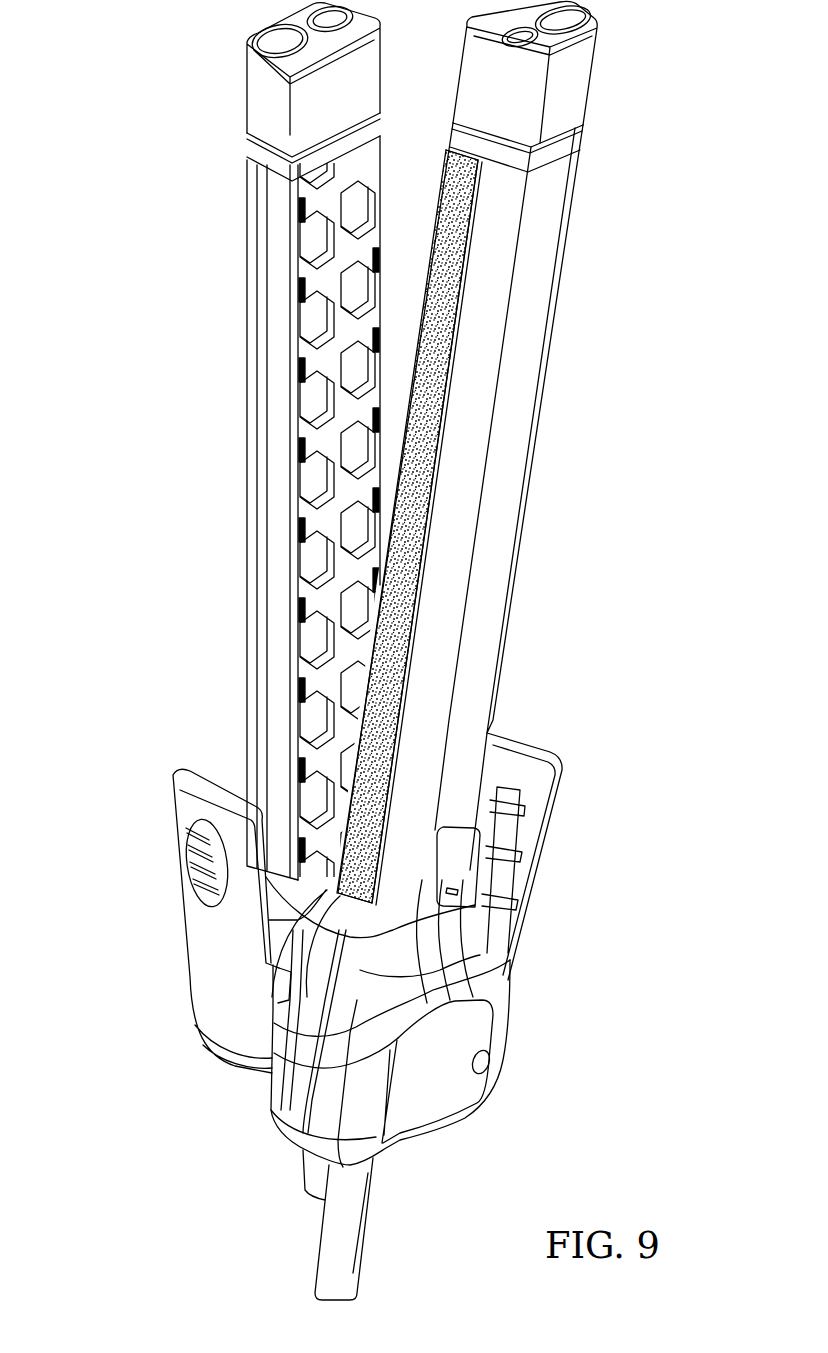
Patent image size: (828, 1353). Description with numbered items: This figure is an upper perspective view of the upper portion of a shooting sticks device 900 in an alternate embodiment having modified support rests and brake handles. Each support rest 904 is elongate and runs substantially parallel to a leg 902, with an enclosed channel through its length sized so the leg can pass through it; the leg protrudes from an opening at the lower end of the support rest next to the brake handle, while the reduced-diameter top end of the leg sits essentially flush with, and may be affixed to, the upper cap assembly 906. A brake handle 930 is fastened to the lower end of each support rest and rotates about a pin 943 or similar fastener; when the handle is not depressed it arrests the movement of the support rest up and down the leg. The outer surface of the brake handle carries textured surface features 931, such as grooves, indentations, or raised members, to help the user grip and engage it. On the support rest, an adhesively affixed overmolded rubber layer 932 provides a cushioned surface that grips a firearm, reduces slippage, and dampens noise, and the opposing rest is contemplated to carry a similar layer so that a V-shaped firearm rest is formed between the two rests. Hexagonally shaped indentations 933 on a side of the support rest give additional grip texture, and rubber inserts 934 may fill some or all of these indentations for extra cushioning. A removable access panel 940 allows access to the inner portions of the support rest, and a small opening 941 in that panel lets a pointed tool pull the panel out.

The hair styling device 900 is at (118, 272).
The leg 902 is at (300, 1175).
The support rest 904 is at (545, 417).
The upper cap assembly 906 is at (594, 90).
The brake handle 930 is at (189, 934).
The textured surface features 931 is at (191, 890).
The overmolded rubber layer 932 is at (407, 527).
The hexagonally shaped indentations 933 is at (337, 428).
The rubber inserts 934 is at (302, 619).
The removable access panel 940 is at (480, 823).
The small opening 941 is at (450, 1000).
The pin 943 is at (490, 1062).